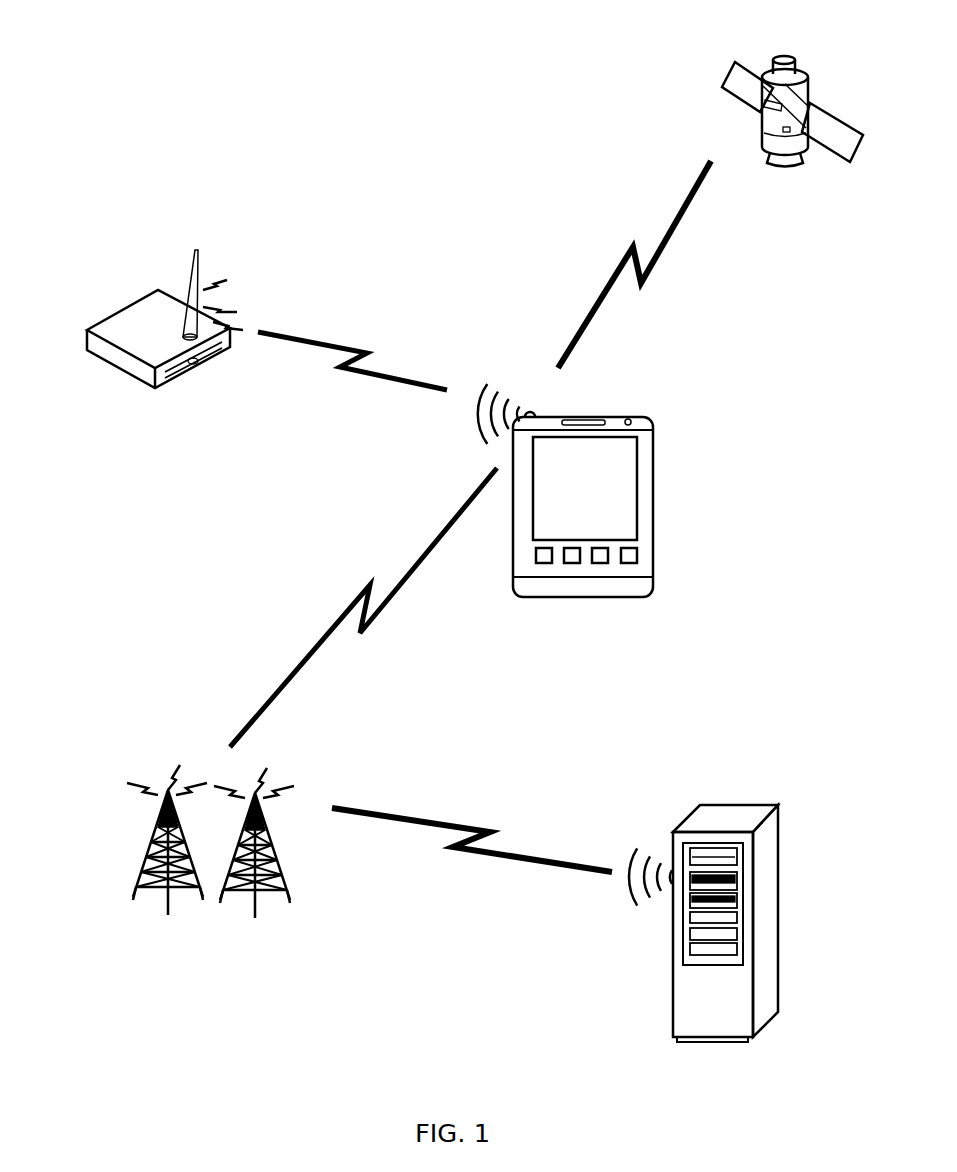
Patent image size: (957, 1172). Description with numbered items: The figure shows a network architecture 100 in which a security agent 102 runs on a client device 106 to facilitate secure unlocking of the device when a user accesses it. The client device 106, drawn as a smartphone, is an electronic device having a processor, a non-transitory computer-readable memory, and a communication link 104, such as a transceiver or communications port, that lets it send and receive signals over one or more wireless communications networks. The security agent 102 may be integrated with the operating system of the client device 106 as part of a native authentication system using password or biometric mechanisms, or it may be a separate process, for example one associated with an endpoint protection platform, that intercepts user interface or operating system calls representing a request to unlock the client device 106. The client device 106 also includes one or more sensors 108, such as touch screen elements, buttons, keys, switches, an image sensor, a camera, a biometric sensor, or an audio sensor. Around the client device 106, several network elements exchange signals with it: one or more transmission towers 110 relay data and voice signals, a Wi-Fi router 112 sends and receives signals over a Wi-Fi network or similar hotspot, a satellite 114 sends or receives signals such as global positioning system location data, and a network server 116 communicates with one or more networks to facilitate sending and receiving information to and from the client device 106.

The network architecture 100 is at (149, 63).
The security agent 102 is at (600, 523).
The communication link 104 is at (538, 402).
The client device 106 is at (625, 502).
The sensors 108 is at (638, 555).
The transmission towers 110 is at (205, 976).
The Wi-Fi router 112 is at (170, 448).
The satellite 114 is at (793, 220).
The network server 116 is at (728, 1091).